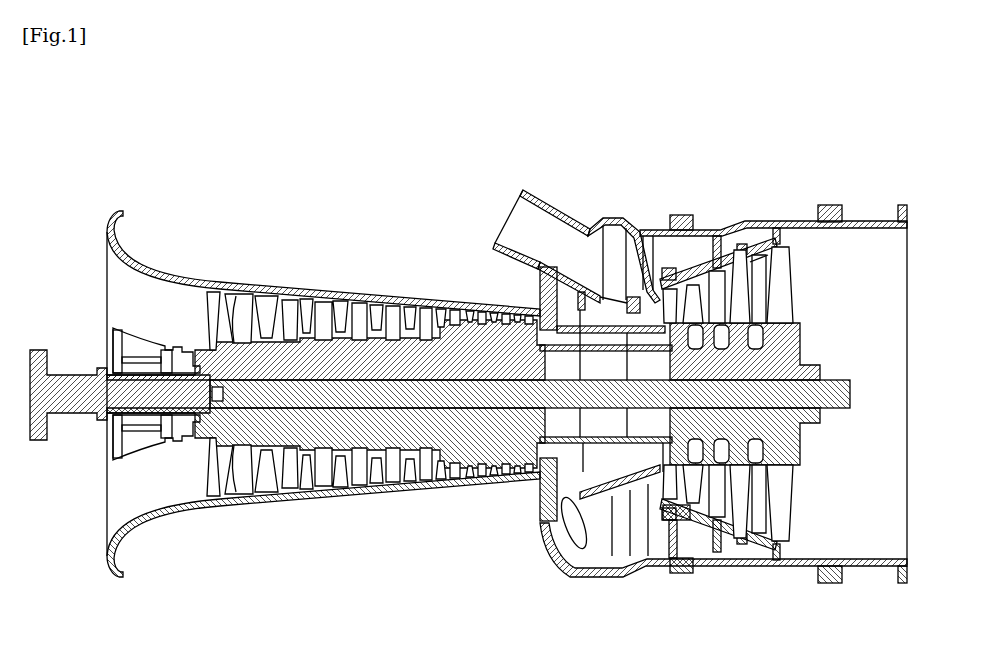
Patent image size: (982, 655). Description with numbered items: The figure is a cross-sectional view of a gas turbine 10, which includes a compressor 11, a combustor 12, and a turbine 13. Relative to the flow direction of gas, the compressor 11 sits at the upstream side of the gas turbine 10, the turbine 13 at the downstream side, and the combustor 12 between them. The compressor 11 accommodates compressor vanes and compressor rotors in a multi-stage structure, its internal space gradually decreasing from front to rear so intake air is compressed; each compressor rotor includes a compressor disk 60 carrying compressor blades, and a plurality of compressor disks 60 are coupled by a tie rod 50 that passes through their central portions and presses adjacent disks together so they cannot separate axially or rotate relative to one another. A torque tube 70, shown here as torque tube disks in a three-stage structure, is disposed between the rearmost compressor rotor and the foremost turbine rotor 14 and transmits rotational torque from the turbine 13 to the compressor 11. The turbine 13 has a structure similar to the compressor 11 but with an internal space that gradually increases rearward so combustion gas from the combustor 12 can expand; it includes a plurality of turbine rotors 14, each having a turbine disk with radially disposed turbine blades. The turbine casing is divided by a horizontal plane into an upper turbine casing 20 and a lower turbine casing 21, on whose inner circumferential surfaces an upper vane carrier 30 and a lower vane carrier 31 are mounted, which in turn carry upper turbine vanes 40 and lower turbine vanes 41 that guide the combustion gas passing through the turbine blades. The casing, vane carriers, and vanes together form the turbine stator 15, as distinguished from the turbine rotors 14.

The gas turbine 10 is at (78, 177).
The compressor 11 is at (307, 284).
The combustor 12 is at (538, 191).
The turbine 13 is at (873, 142).
The turbine rotor 14 is at (800, 314).
The turbine stator 15 is at (765, 210).
The upper turbine casing 20 is at (700, 263).
The lower turbine casing 21 is at (702, 563).
The upper vane carrier 30 is at (667, 222).
The lower vane carrier 31 is at (730, 533).
The upper turbine vane 40 is at (757, 277).
The lower turbine vane 41 is at (760, 523).
The tie rod 50 is at (357, 398).
The compressor disk 60 is at (273, 347).
The torque tube 70 is at (551, 345).